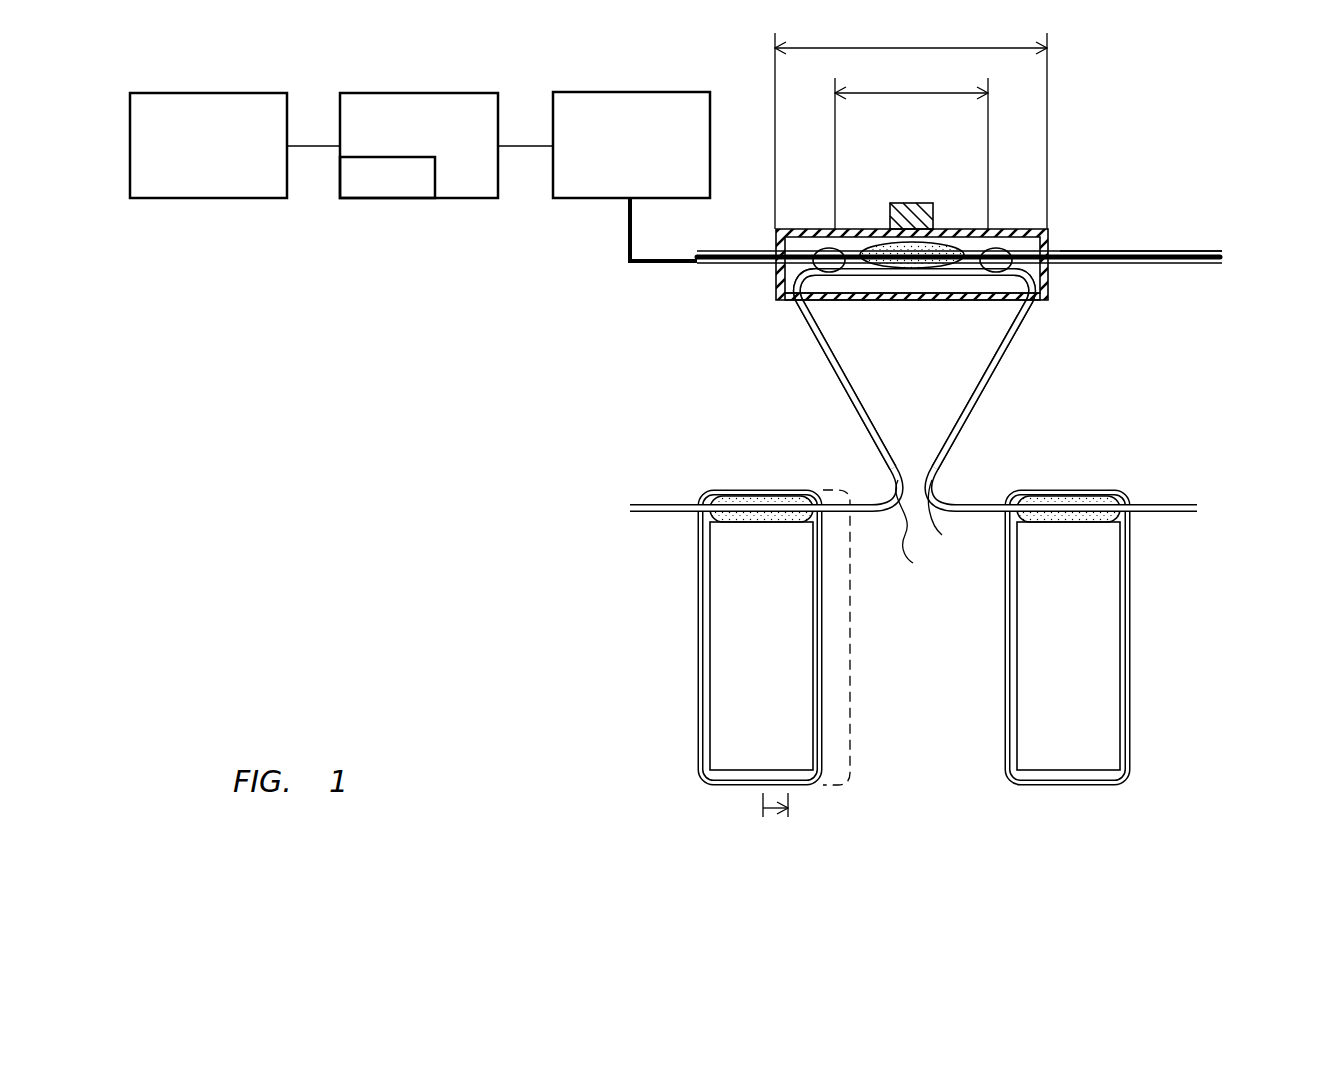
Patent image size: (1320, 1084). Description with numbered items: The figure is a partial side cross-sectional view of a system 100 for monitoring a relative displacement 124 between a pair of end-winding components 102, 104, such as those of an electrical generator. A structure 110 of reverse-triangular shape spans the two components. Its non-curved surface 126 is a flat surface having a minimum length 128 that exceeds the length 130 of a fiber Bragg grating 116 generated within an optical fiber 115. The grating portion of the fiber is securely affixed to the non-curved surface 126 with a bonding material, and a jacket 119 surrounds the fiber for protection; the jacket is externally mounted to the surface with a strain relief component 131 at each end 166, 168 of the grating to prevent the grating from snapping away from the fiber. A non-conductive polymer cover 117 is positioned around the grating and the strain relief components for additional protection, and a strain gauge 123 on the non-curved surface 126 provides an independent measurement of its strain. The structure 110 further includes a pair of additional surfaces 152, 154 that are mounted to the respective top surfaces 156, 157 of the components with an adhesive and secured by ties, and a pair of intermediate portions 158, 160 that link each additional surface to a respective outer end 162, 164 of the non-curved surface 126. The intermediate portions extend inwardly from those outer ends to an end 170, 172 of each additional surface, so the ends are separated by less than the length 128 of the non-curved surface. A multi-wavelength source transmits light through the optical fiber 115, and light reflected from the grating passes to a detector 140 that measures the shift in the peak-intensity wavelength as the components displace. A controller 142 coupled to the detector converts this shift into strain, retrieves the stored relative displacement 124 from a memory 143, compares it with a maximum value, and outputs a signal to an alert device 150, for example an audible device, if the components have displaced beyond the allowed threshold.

The system 100 is at (1150, 171).
The end-winding component 102 is at (710, 620).
The end-winding component 104 is at (1120, 620).
The structure 110 is at (906, 390).
The optical fiber 115 is at (985, 258).
The fiber Bragg grating 116 is at (920, 277).
The cover 117 is at (950, 237).
The jacket 119 is at (1112, 265).
The strain gauge 123 is at (905, 203).
The relative displacement 124 is at (771, 812).
The non-curved surface 126 is at (966, 276).
The minimum length 128 is at (892, 48).
The length 130 is at (893, 93).
The strain relief component 131 is at (823, 248).
The detector 140 is at (610, 92).
The controller 142 is at (398, 92).
The memory 143 is at (387, 200).
The alert device 150 is at (188, 92).
The additional surface 152 is at (653, 504).
The additional surface 154 is at (1163, 504).
The top surface 156 is at (763, 522).
The top surface 157 is at (1060, 522).
The intermediate portion 158 is at (858, 427).
The intermediate portion 160 is at (970, 427).
The outer end 162 is at (838, 303).
The outer end 164 is at (985, 303).
The end 166 is at (859, 247).
The end 168 is at (961, 244).
The end 170 is at (925, 530).
The end 172 is at (956, 515).